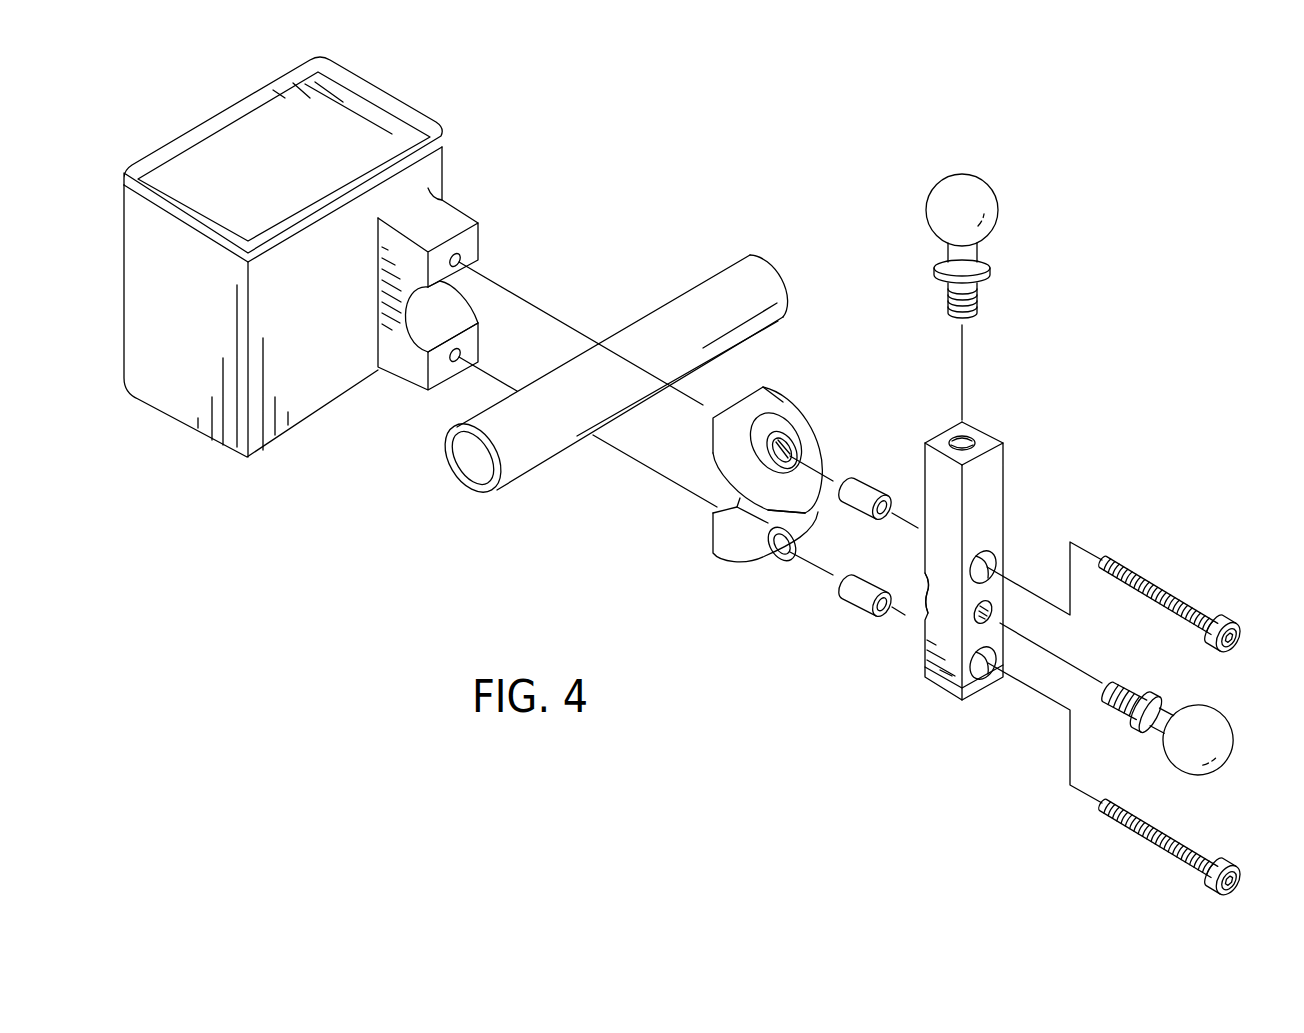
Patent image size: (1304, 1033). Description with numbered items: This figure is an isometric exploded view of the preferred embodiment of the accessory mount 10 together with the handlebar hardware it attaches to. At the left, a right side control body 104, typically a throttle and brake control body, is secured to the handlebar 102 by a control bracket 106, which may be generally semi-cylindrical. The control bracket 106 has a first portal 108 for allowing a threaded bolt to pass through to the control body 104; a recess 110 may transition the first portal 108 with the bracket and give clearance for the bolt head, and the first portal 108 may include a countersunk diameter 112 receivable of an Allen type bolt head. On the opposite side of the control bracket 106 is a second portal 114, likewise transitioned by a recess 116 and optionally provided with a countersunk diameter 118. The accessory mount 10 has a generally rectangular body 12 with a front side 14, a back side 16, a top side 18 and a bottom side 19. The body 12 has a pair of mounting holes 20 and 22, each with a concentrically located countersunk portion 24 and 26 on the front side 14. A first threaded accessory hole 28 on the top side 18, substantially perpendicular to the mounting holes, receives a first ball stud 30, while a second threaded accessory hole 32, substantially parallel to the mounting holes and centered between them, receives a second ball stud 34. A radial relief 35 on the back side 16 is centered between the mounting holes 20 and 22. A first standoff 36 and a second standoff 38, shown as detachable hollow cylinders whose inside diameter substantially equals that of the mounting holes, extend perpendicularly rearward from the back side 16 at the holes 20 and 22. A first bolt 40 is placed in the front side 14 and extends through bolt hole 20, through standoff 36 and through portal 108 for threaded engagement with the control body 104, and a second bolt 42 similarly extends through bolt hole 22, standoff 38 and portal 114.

The accessory mount 10 is at (1045, 532).
The body 12 is at (961, 563).
The front side 14 is at (982, 522).
The back side 16 is at (962, 417).
The top side 18 is at (970, 427).
The bottom side 19 is at (948, 693).
The mounting hole 20 is at (990, 555).
The mounting hole 22 is at (990, 663).
The countersunk portion 24 is at (975, 577).
The countersunk portion 26 is at (990, 693).
The first threaded accessory hole 28 is at (977, 433).
The first ball stud 30 is at (963, 198).
The second threaded accessory hole 32 is at (997, 612).
The second ball stud 34 is at (1207, 722).
The radial relief 35 is at (927, 613).
The first standoff 36 is at (870, 478).
The second standoff 38 is at (852, 603).
The first bolt 40 is at (1233, 618).
The second bolt 42 is at (1237, 860).
The handlebar 102 is at (530, 440).
The right side control body 104 is at (413, 78).
The control bracket 106 is at (755, 487).
The first portal 108 is at (767, 440).
The recess 110 is at (795, 447).
The countersunk diameter 112 is at (803, 442).
The second portal 114 is at (767, 562).
The recess 116 is at (800, 507).
The countersunk diameter 118 is at (787, 560).